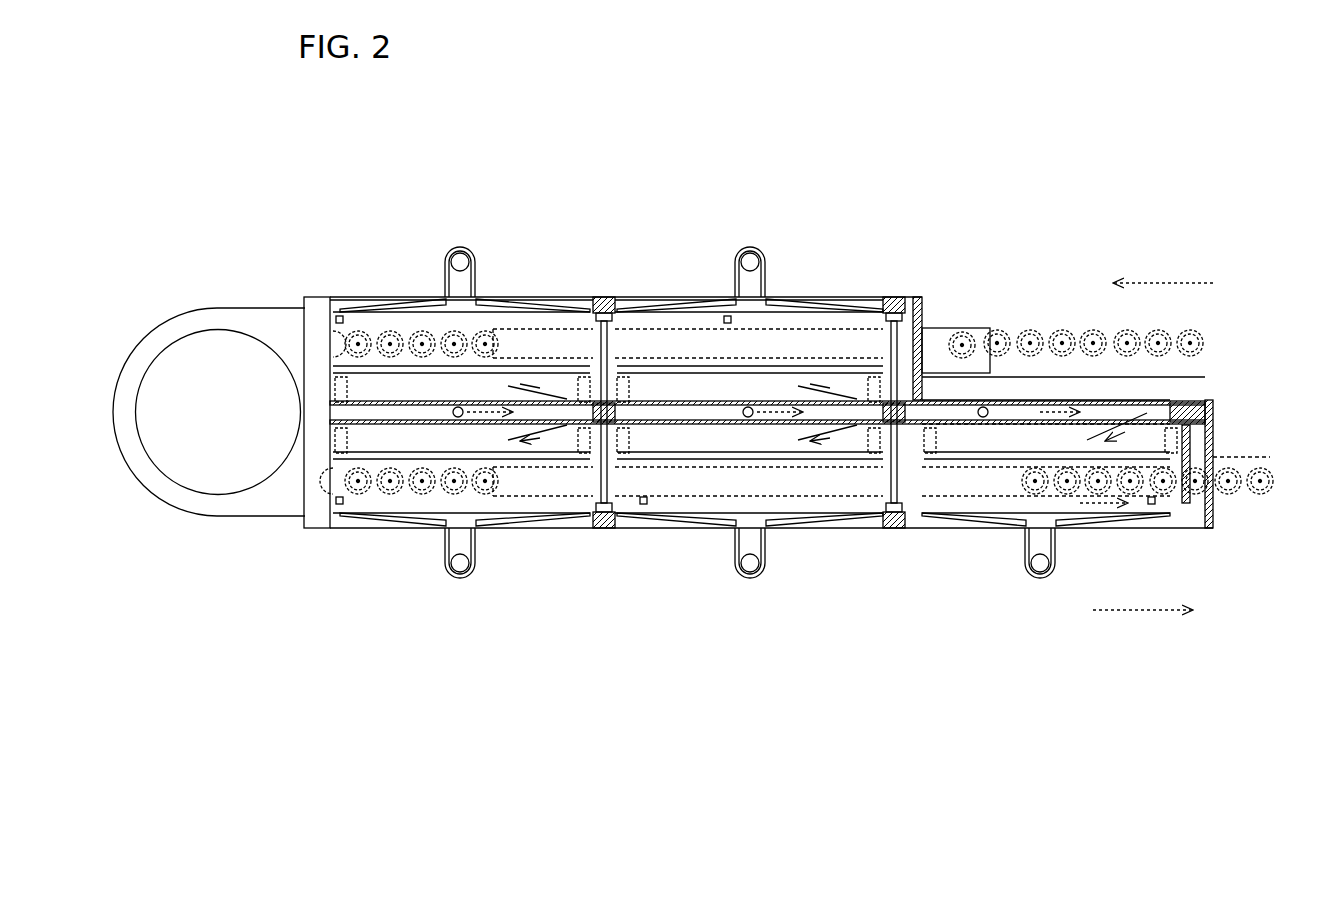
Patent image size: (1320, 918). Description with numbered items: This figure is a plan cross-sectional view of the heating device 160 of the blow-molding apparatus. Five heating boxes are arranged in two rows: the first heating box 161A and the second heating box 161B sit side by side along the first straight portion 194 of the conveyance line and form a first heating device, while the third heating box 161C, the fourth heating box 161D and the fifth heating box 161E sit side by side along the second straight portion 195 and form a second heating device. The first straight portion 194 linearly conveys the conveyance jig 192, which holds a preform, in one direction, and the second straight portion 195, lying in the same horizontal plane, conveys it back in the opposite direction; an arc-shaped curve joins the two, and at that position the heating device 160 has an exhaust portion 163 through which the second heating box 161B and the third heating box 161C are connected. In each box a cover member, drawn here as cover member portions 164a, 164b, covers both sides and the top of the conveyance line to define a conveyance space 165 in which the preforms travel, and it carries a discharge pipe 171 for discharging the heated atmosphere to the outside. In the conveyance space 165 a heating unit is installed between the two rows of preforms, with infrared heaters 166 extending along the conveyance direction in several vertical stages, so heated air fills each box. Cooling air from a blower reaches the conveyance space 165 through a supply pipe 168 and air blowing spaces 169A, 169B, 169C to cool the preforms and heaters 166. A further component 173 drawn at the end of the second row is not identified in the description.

The heating device 160 is at (1010, 182).
The first heating box 161A is at (865, 215).
The second heating box 161B is at (580, 215).
The third heating box 161C is at (515, 663).
The fourth heating box 161D is at (805, 663).
The fifth heating box 161E is at (1097, 663).
The exhaust portion 163 is at (243, 265).
The inner wall 164a is at (500, 395).
The tapered outer wall 164b is at (493, 318).
The conveyance space 165 is at (342, 318).
The heater 166 is at (388, 366).
The supply pipe 168 is at (485, 424).
The first passage 169A is at (1023, 408).
The second passage 169B is at (753, 418).
The third passage 169C is at (463, 418).
The discharge pipe 171 is at (460, 256).
The chain end 173 is at (1262, 497).
The conveyance jig 192 is at (963, 333).
The first straight portion 194 is at (1070, 312).
The second straight portion 195 is at (1165, 492).